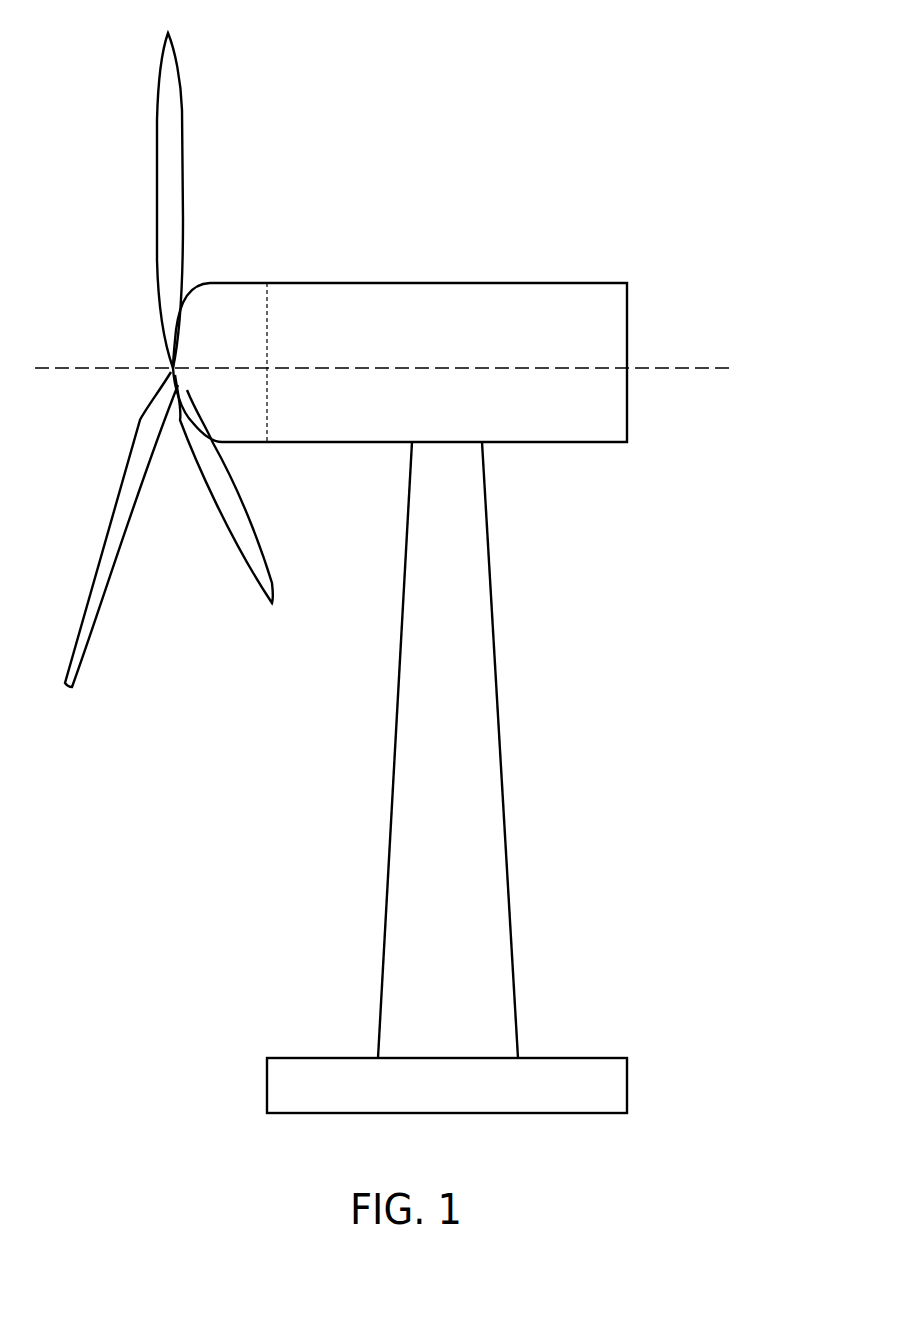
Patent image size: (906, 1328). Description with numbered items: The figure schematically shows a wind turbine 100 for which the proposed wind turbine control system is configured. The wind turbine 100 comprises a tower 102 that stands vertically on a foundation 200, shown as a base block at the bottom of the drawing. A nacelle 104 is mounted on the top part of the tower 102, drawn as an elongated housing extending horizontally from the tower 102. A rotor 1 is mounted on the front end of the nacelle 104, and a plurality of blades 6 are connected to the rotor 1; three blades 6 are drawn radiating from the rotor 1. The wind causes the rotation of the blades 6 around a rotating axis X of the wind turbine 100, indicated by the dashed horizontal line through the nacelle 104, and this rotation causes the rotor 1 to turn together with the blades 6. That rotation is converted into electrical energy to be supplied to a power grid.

The wind turbine 100 is at (652, 220).
The nacelle 104 is at (372, 281).
The rotor 1 is at (222, 317).
The blades 6 is at (155, 162).
The tower 102 is at (465, 632).
The foundation 200 is at (580, 1090).
The rotating axis X is at (672, 367).